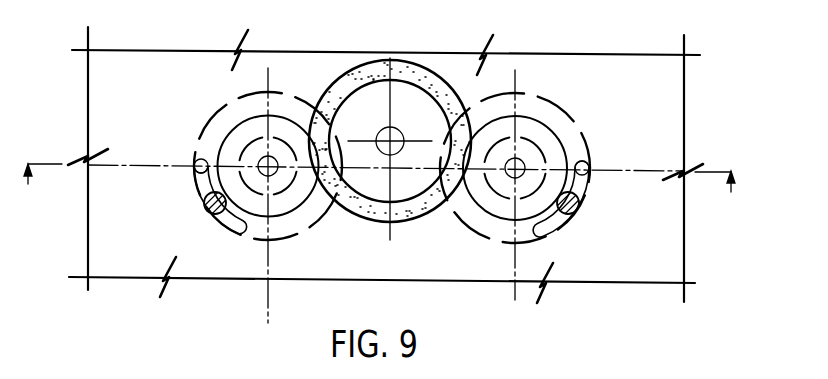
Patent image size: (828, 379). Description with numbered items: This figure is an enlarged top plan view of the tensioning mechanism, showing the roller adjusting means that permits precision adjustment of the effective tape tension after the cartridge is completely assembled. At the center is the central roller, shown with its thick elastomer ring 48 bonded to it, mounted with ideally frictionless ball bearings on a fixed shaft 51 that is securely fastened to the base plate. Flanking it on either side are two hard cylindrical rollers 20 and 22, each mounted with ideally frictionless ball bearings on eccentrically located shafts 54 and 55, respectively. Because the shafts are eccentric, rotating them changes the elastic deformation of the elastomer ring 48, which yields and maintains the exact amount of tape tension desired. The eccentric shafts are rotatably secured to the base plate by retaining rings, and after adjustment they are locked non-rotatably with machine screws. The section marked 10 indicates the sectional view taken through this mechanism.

The section line 10- 10 is at (376, 190).
The hard cylindrical roller 20 is at (557, 137).
The hard cylindrical roller 22 is at (227, 138).
The elastomer ring 48 is at (370, 70).
The fixed shaft 51 is at (400, 128).
The eccentrically located shaft 54 is at (522, 157).
The eccentrically located shaft 55 is at (277, 153).